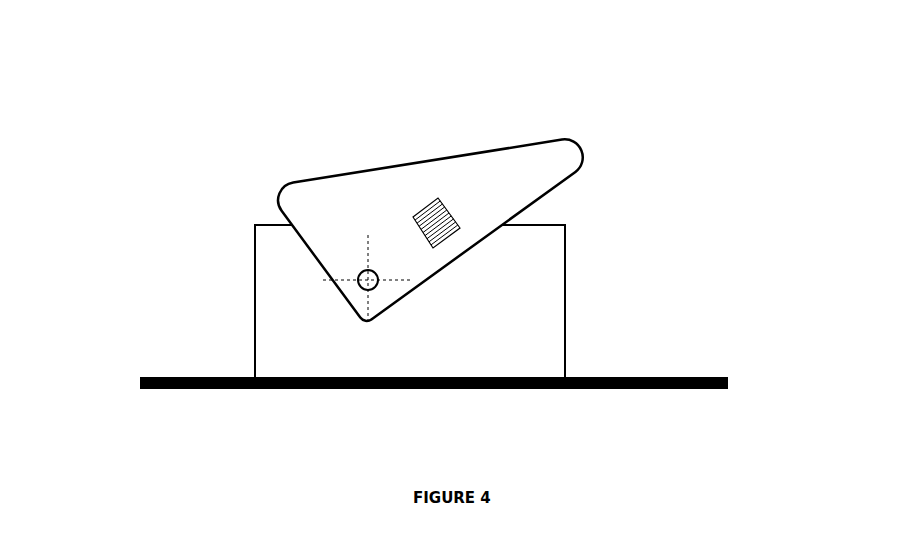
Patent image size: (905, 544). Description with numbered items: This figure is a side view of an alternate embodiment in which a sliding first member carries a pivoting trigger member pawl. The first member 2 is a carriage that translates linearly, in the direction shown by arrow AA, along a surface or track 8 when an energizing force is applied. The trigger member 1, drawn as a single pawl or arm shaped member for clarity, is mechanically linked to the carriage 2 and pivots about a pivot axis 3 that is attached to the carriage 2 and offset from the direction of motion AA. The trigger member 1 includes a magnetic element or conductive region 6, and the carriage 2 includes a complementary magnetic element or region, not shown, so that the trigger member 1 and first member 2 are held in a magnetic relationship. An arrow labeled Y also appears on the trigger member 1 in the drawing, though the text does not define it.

The trigger member 1 is at (519, 127).
The first member 2 is at (266, 279).
The pivot axis 3 is at (354, 271).
The magnetic element 6 is at (415, 206).
The surface or track 8 is at (146, 390).
The Y axis direction Y is at (462, 195).
The direction of motion AA is at (593, 357).